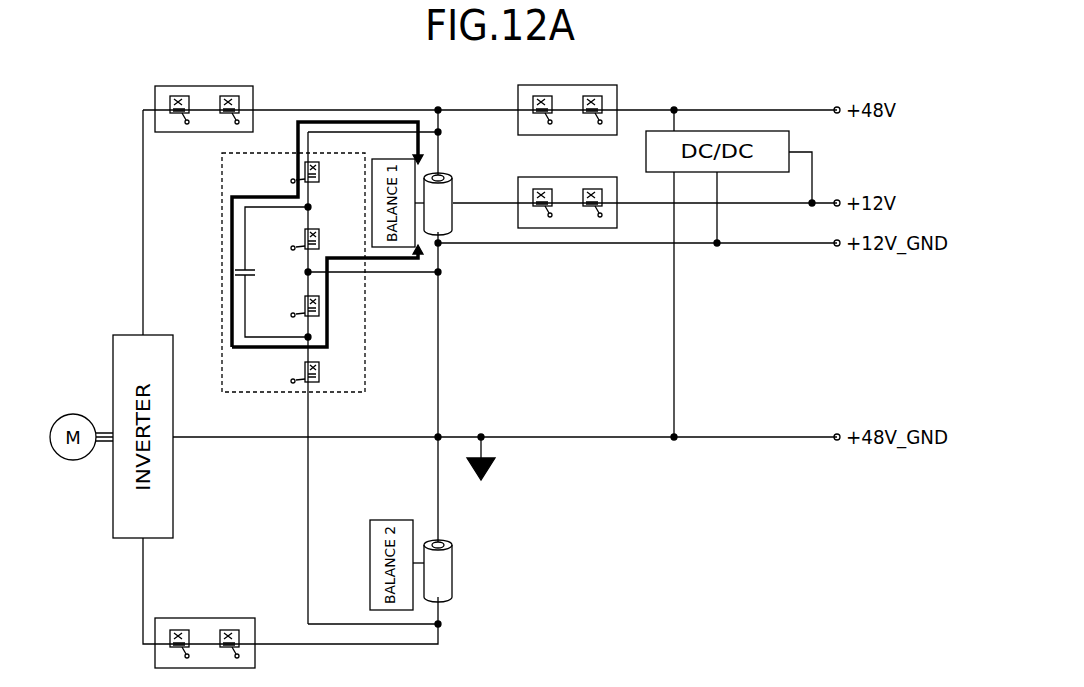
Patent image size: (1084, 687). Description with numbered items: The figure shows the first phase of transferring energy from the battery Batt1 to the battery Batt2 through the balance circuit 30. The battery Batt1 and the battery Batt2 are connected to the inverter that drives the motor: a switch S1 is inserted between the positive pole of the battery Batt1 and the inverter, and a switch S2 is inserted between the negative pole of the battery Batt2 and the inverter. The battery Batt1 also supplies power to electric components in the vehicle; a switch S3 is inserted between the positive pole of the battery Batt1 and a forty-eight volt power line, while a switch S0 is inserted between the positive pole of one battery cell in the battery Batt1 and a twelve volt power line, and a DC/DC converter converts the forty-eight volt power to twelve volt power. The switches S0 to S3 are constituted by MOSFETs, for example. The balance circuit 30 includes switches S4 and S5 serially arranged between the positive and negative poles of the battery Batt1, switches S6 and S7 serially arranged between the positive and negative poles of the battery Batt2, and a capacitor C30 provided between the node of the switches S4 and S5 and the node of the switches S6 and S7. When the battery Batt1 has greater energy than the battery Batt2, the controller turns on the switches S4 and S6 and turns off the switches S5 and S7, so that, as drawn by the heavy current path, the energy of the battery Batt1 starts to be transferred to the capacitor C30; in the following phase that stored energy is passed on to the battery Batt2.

The balance circuit 30 is at (220, 168).
The switch S1 is at (204, 95).
The switch S2 is at (205, 629).
The switch S3 is at (567, 95).
The switch S0 is at (567, 188).
The switch S4 is at (319, 172).
The switch S5 is at (319, 239).
The switch S6 is at (319, 306).
The switch S7 is at (319, 372).
The capacitor C30 is at (271, 272).
The battery Batt1 is at (462, 199).
The battery Batt2 is at (462, 562).